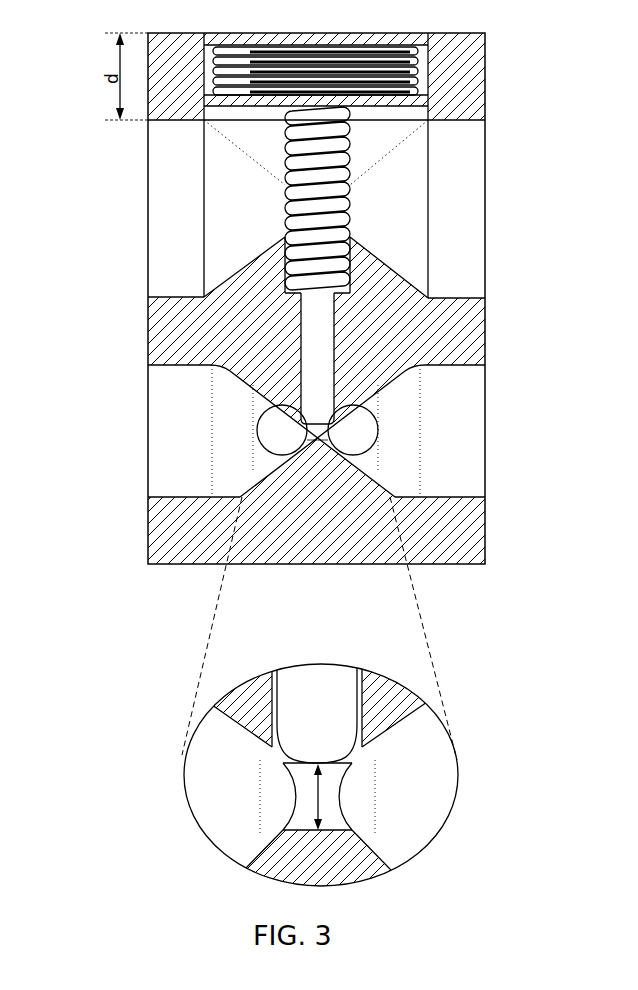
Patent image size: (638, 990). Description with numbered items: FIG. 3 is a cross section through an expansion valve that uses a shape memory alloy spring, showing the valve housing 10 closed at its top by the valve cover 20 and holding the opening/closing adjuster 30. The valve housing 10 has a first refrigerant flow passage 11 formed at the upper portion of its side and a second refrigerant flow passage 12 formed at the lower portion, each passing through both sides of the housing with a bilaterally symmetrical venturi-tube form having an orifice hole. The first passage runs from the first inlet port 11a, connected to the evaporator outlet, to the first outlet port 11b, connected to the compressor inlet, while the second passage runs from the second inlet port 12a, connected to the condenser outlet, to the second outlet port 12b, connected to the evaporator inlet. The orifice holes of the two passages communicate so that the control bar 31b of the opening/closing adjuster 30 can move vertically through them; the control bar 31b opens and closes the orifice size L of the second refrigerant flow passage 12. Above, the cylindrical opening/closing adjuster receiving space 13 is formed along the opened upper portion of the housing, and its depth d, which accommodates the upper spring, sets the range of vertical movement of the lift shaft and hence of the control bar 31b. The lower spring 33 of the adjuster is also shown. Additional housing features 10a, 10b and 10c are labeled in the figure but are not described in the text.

The valve housing 10 is at (462, 100).
The inclined surface 10a is at (285, 253).
The orifice 10b is at (305, 425).
The pin hole 10c is at (298, 335).
The first refrigerant flow passage 11 is at (178, 156).
The first inlet port 11a is at (178, 236).
The first outlet port 11b is at (468, 225).
The second refrigerant flow passage 12 is at (190, 347).
The second inlet port 12a is at (487, 425).
The second outlet port 12b is at (175, 434).
The opening/closing adjuster receiving space 13 is at (462, 78).
The valve cover 20 is at (485, 42).
The opening/closing adjuster 30 is at (360, 150).
The control bar 31b is at (335, 338).
The lower spring 33 is at (350, 246).